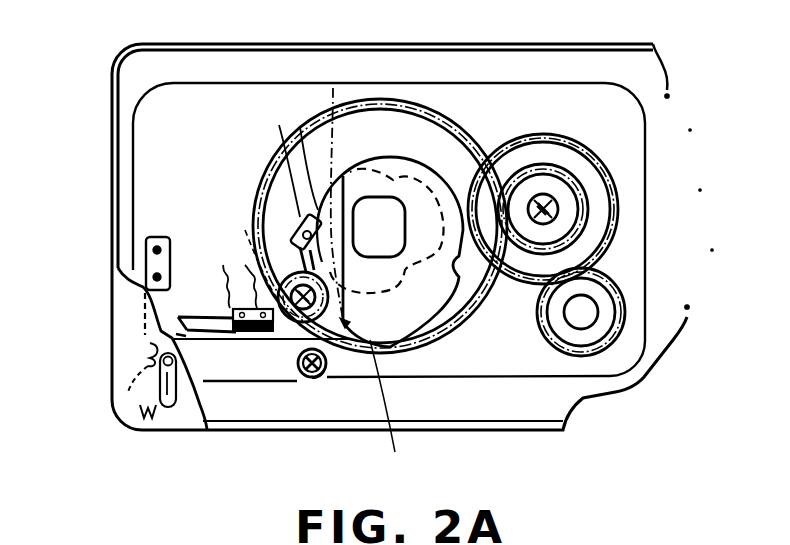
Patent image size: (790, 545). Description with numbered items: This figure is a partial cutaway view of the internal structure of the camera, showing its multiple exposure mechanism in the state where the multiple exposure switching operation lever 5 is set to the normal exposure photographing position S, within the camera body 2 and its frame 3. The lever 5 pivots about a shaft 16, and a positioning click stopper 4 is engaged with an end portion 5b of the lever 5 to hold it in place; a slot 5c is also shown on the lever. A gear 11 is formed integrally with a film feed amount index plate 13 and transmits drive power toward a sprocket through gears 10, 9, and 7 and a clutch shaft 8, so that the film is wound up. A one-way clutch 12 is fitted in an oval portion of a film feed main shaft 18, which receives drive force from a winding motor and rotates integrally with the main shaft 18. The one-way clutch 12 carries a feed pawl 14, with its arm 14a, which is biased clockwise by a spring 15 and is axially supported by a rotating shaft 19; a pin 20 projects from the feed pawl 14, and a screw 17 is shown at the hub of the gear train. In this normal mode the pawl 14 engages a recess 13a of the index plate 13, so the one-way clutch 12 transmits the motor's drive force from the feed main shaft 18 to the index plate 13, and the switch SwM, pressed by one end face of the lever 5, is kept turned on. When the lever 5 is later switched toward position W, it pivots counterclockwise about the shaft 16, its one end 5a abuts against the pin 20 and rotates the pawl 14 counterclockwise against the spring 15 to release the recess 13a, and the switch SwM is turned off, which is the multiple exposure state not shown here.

The camera body 2 is at (155, 437).
The frame 3 is at (177, 102).
The positioning click stopper 4 is at (150, 237).
The multiple exposure switching operation lever 5 is at (247, 373).
The one end of the lever 5a is at (290, 155).
The end portion of the lever 5b is at (192, 382).
The slot 5c is at (173, 343).
The gear 7 is at (623, 308).
The clutch shaft 8 is at (597, 293).
The gear 9 is at (590, 182).
The gear 10 is at (552, 190).
The gear 11 is at (403, 125).
The one-way clutch 12 is at (383, 333).
The film feed amount index plate 13 is at (362, 152).
The recess of the index plate 13a is at (333, 88).
The feed pawl 14 is at (297, 223).
The lever arm 14a is at (322, 200).
The spring 15 is at (357, 335).
The shaft 16 is at (298, 383).
The screw 17 is at (562, 210).
The film feed main shaft 18 is at (395, 200).
The rotating shaft 19 is at (245, 230).
The pin 20 is at (272, 223).
The switch SwM is at (190, 316).